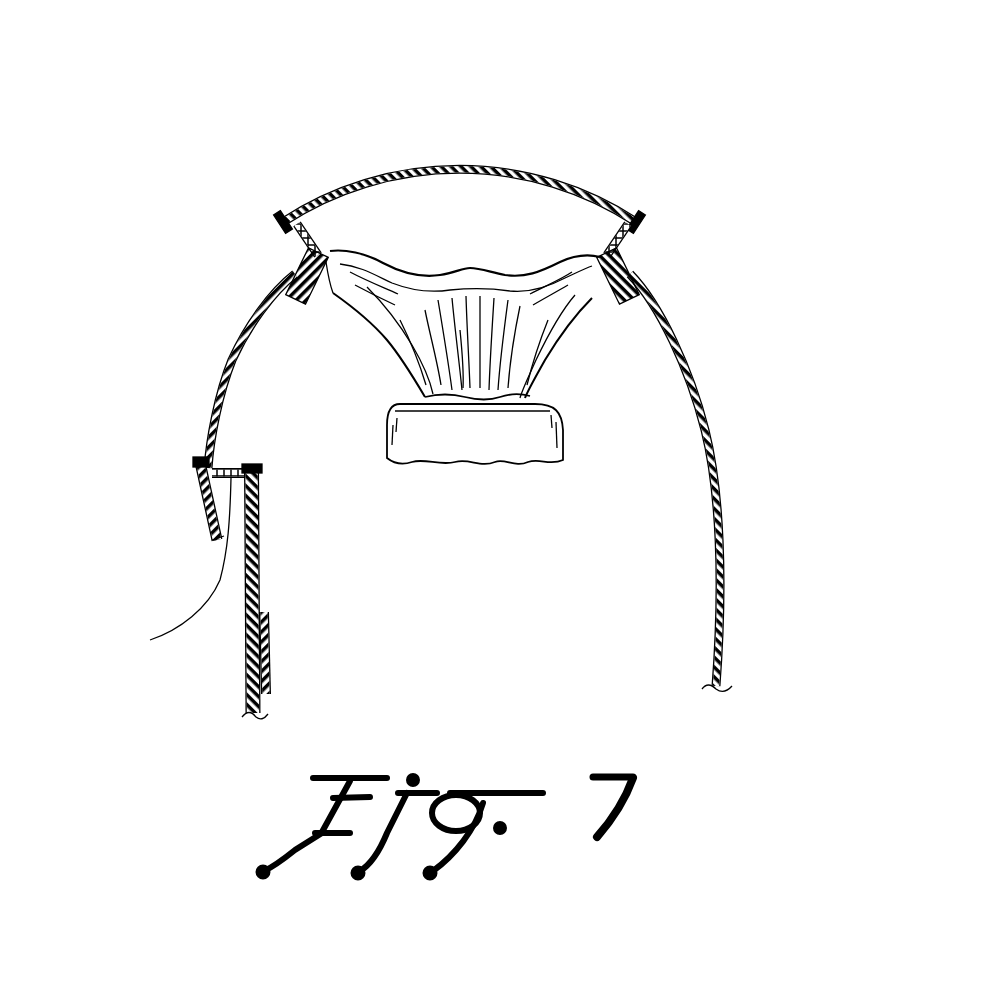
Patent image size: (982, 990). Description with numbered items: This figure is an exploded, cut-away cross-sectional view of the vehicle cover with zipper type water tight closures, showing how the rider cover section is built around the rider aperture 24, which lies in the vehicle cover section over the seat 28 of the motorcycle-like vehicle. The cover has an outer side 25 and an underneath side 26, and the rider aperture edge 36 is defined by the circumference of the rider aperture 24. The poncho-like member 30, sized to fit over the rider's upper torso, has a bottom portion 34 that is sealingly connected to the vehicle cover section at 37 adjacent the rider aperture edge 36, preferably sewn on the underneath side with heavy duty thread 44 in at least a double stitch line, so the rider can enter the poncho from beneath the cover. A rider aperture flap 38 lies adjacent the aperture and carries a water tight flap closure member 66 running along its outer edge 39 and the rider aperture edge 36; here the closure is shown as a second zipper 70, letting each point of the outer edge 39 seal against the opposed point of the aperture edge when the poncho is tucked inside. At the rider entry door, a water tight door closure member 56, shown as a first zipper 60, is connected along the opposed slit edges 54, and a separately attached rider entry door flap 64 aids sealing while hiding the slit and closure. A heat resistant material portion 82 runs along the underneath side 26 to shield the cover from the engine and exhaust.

The rider aperture 24 is at (448, 222).
The outer side 25 is at (225, 388).
The underneath side 26 is at (258, 570).
The seat 28 is at (493, 465).
The poncho-like member 30 is at (500, 327).
The bottom portion 34 is at (296, 318).
The rider aperture edge 36 is at (325, 246).
The sealing connection 37 is at (283, 296).
The rider aperture flap 38 is at (354, 178).
The outer edge 39 is at (284, 218).
The heavy duty thread 44 is at (310, 292).
The slit edges 54 is at (200, 518).
The water tight door closure member 56 is at (240, 446).
The first zipper 60 is at (226, 580).
The rider entry door flap 64 is at (207, 534).
The water tight flap closure member 66 is at (280, 254).
The second zipper 70 is at (303, 208).
The heat resistant material portion 82 is at (270, 650).